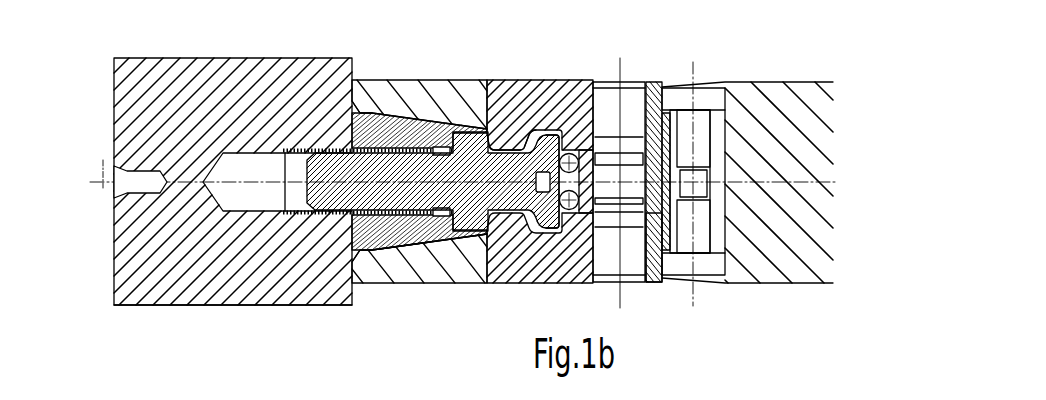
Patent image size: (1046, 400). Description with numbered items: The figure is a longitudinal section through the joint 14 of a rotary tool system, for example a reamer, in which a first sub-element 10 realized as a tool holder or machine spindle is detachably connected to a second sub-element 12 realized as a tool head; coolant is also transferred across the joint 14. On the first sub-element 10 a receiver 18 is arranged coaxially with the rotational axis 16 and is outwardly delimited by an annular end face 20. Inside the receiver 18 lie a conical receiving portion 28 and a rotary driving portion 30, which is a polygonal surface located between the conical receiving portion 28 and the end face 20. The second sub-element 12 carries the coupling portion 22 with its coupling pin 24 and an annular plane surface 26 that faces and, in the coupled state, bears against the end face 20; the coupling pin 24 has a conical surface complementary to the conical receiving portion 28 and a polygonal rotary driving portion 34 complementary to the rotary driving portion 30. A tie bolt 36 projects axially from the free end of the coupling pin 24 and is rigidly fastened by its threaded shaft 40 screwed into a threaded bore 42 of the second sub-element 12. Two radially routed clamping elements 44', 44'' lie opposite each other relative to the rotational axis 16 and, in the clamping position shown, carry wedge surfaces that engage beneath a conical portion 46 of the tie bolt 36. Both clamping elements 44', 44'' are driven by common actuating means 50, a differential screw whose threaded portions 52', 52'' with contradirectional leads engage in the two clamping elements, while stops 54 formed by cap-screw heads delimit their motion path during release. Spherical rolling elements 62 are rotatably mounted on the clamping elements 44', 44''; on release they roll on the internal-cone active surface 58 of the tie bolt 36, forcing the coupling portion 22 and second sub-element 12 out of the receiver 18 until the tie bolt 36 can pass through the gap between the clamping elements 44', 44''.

The first sub-element 10 is at (465, 92).
The second sub-element 12 is at (290, 72).
The joint 14 is at (409, 284).
The rotational axis 16 is at (102, 156).
The receiver 18 is at (382, 113).
The annular end face 20 is at (330, 306).
The coupling portion 22 is at (430, 127).
The coupling pin 24 is at (450, 240).
The annular plane surface 26 is at (371, 256).
The conical receiving portion 28 is at (413, 250).
The rotary driving portion 30 is at (400, 258).
The polygonal rotary driving portion 34 is at (365, 103).
The tie bolt 36 is at (542, 125).
The threaded shaft 40 is at (300, 222).
The threaded bore 42 is at (333, 222).
The clamping element 44' is at (540, 86).
The clamping element 44'' is at (540, 268).
The conical portion 46 is at (525, 105).
The actuating means 50 is at (634, 262).
The threaded portion 52' is at (660, 148).
The threaded portion 52'' is at (683, 274).
The stops 54 is at (678, 100).
The active surface 58 is at (595, 82).
The spherical rolling elements 62 is at (581, 262).